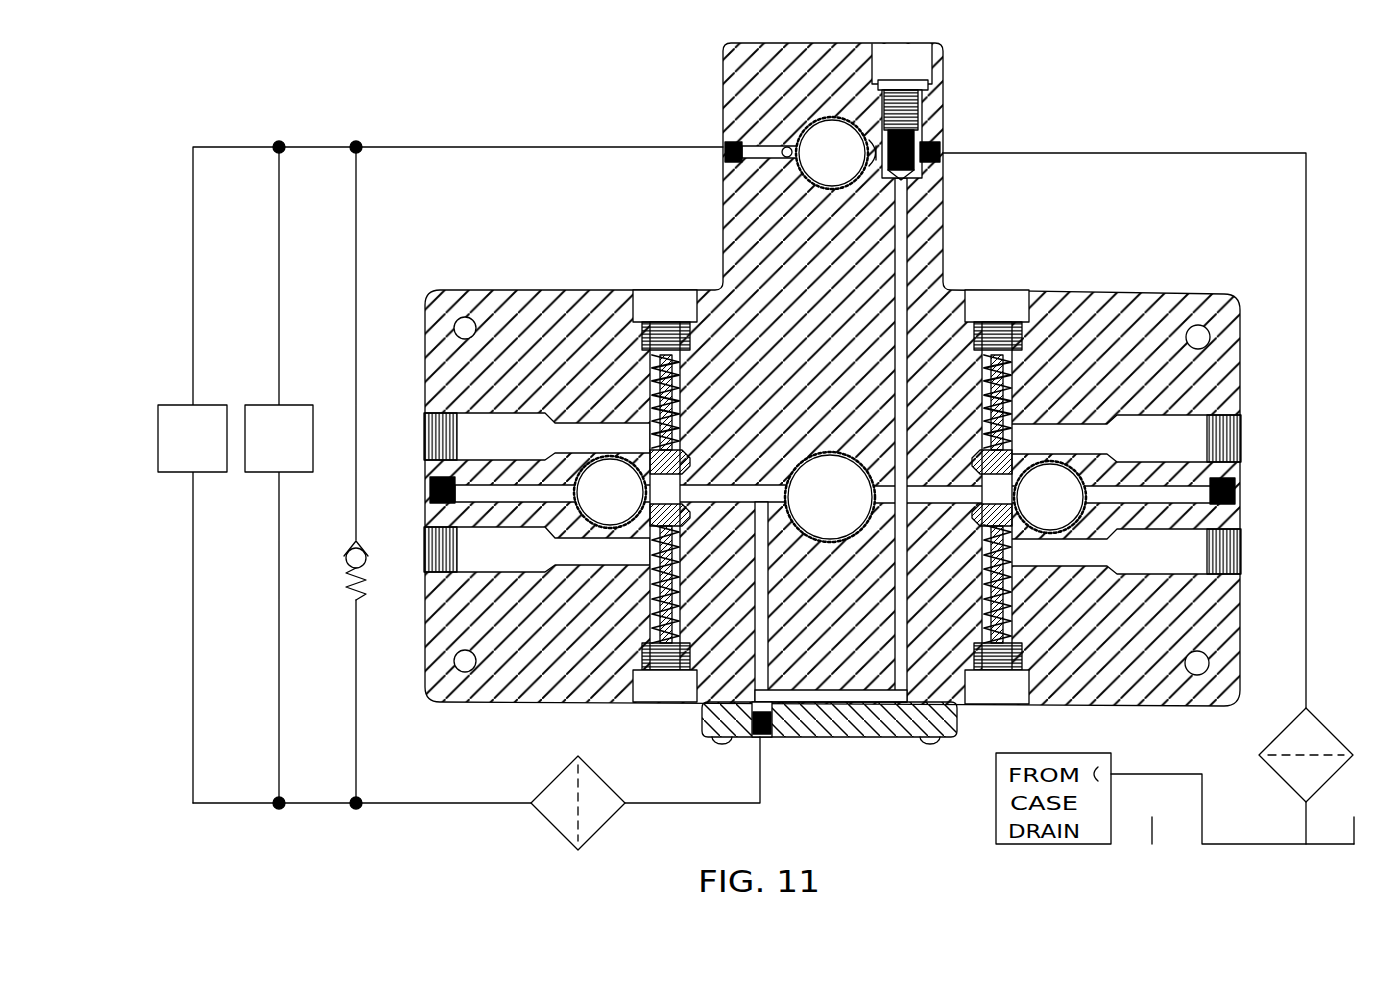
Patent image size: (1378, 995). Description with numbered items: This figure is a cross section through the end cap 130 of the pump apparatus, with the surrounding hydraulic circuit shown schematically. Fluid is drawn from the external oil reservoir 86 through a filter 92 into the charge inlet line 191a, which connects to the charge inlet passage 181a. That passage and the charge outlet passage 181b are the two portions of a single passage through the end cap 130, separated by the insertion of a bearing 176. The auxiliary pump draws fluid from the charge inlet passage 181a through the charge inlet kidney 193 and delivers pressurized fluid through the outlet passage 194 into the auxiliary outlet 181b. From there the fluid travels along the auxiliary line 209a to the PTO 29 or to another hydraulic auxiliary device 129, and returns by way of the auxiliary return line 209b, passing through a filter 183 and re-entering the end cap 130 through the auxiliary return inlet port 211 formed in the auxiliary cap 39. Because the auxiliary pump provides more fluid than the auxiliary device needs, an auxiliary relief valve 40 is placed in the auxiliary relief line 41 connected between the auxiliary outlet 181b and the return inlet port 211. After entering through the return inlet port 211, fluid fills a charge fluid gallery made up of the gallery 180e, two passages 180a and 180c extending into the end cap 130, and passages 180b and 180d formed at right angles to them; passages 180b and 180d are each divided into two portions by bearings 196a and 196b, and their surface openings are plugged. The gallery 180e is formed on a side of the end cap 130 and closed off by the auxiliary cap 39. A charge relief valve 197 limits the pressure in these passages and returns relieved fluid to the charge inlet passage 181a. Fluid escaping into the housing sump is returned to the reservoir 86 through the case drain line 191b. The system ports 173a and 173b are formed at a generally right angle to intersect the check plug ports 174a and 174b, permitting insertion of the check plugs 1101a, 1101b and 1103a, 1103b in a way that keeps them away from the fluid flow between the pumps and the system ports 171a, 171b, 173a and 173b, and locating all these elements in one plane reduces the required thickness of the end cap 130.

The end cap 130 is at (515, 290).
The system port 173a is at (519, 449).
The system port 173b is at (1192, 450).
The system port 171a is at (516, 563).
The system port 171b is at (1192, 566).
The passage 180a is at (768, 660).
The passage 180b is at (722, 472).
The passage 180c is at (908, 228).
The passage 180d is at (935, 485).
The gallery 180e is at (878, 700).
The check plug port 174a is at (656, 385).
The check plug port 174b is at (1008, 385).
The check plug 1103a is at (660, 290).
The check plug 1103b is at (999, 290).
The check plug 1101a is at (660, 702).
The check plug 1101b is at (996, 704).
The bearing 196a is at (582, 462).
The bearing 196b is at (1076, 466).
The bearing 176 is at (828, 118).
The outlet passage 194 is at (785, 147).
The charge inlet passage 181a is at (930, 150).
The charge outlet passage 181b is at (760, 148).
The charge inlet kidney 193 is at (852, 186).
The charge relief valve 197 is at (920, 76).
The auxiliary cap 39 is at (860, 737).
The auxiliary return inlet port 211 is at (768, 742).
The auxiliary line 209a is at (452, 147).
The auxiliary return line 209b is at (456, 803).
The auxiliary relief line 41 is at (356, 303).
The PTO 29 is at (207, 451).
The hydraulic auxiliary device 129 is at (299, 451).
The auxiliary relief valve 40 is at (347, 548).
The filter 183 is at (548, 787).
The charge inlet line 191a is at (1306, 204).
The case drain line 191b is at (1152, 774).
The filter 92 is at (1329, 736).
The external oil reservoir 86 is at (1172, 844).